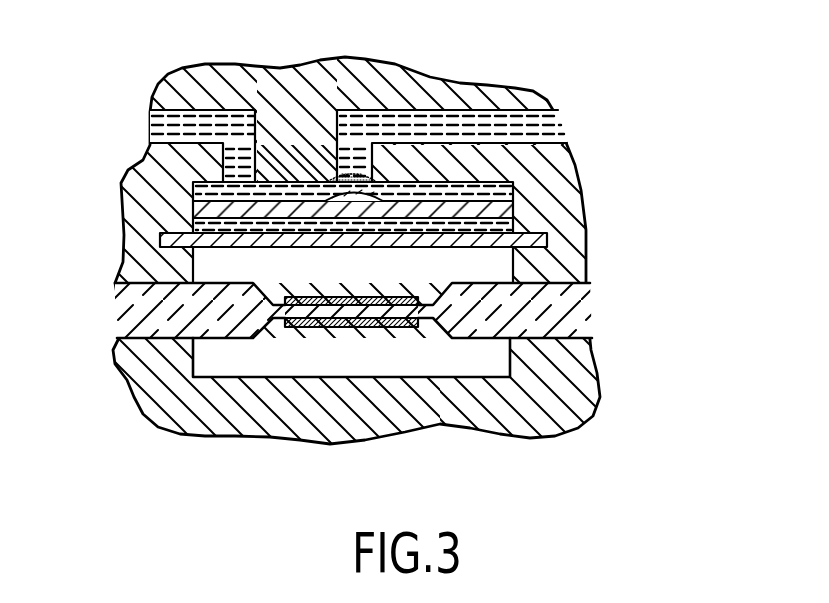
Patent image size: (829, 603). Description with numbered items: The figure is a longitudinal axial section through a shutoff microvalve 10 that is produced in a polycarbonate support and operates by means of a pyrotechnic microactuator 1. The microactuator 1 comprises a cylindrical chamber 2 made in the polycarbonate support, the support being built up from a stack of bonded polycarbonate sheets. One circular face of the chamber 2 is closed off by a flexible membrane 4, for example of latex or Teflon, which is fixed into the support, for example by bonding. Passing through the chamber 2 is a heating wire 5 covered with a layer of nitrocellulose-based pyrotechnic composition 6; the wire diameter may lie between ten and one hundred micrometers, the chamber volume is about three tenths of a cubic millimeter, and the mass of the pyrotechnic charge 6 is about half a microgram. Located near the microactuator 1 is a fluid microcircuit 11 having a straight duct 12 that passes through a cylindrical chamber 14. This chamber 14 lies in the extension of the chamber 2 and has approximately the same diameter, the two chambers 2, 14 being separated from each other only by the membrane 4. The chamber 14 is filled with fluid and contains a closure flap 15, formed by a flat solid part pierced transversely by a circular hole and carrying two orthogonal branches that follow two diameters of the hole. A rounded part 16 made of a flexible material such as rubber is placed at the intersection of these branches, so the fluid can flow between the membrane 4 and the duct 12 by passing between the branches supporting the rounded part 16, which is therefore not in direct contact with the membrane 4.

The microactuator 1 is at (233, 272).
The chamber 2 is at (456, 360).
The flexible membrane 4 is at (423, 250).
The heating wire 5 is at (318, 328).
The pyrotechnic composition 6 is at (378, 328).
The shutoff microvalve 10 is at (573, 151).
The fluid microcircuit 11 is at (436, 110).
The straight duct 12 is at (537, 131).
The cylindrical chamber 14 is at (514, 189).
The closure flap 15 is at (514, 212).
The rounded part 16 is at (353, 205).